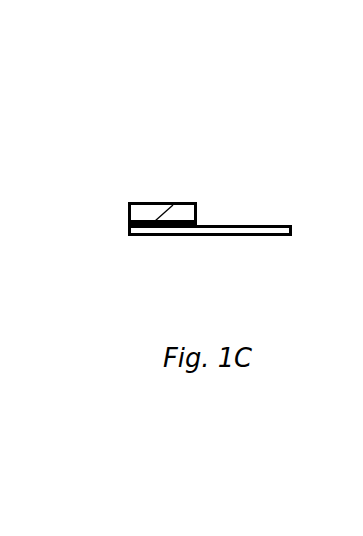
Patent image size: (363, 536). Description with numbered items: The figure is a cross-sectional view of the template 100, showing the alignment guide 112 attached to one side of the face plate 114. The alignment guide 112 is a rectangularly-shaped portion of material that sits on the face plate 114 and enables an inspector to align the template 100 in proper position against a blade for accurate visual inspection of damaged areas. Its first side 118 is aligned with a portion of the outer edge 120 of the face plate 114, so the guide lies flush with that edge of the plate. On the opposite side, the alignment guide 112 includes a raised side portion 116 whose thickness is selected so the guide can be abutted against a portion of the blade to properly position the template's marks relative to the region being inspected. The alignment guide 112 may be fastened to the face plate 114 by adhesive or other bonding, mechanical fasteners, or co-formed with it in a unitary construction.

The template 100 is at (234, 113).
The alignment guide 112 is at (157, 203).
The face plate 114 is at (248, 236).
The raised side portion 116 is at (197, 209).
The first side 118 is at (128, 216).
The outer edge 120 is at (128, 233).